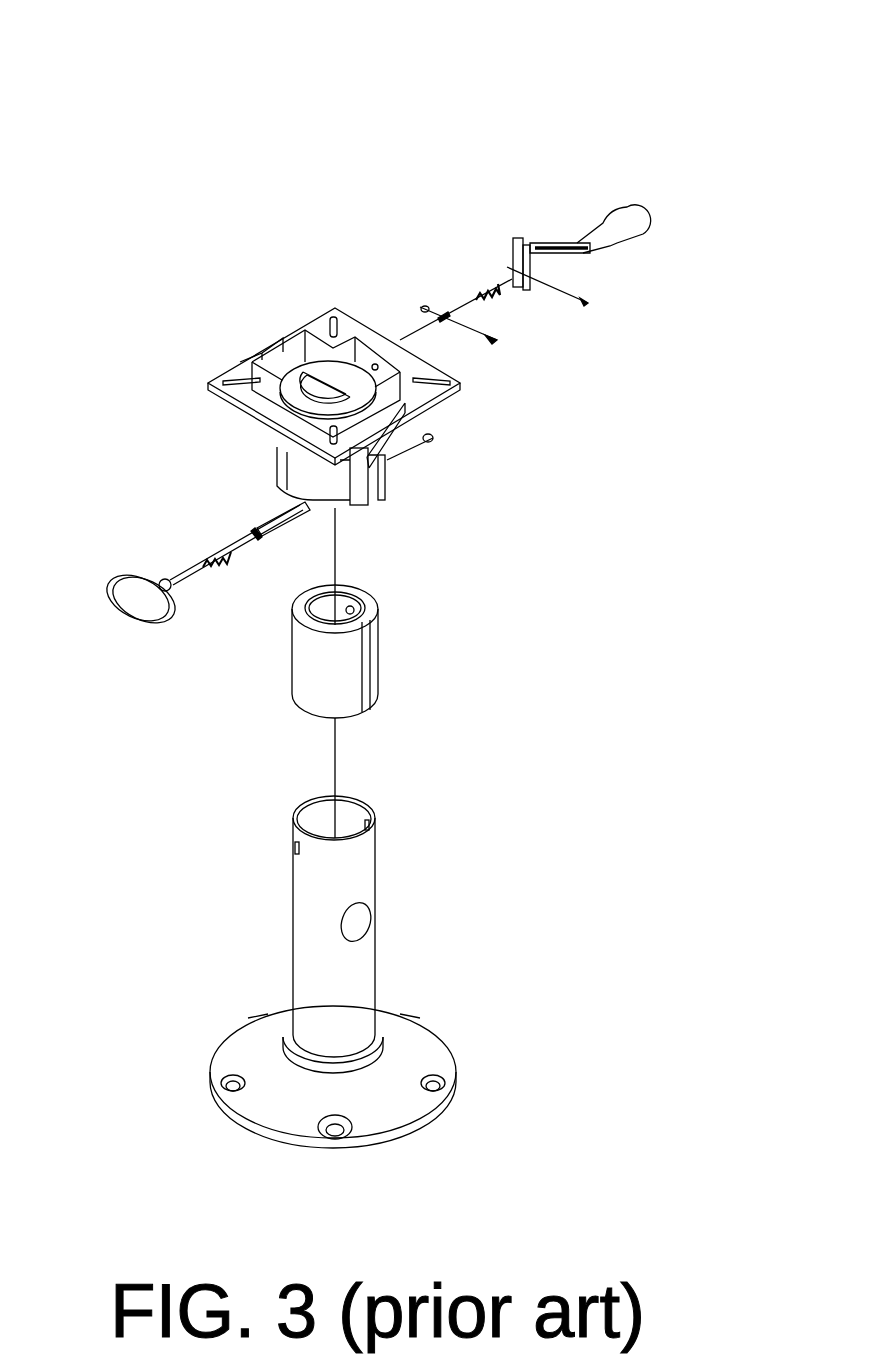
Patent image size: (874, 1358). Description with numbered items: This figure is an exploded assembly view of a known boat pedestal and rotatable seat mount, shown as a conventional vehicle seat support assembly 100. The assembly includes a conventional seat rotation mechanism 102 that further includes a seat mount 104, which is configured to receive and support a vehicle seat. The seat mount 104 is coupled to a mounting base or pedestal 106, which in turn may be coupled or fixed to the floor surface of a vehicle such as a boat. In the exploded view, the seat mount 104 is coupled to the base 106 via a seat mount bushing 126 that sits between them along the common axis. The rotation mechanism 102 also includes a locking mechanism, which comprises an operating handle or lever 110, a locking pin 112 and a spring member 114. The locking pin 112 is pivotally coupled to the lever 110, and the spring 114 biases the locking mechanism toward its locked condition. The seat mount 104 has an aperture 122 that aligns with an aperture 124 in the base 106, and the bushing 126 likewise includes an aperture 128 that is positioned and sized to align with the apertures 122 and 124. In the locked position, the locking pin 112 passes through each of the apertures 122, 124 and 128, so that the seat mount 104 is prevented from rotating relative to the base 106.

The vehicle seat support assembly 100 is at (175, 85).
The seat rotation mechanism 102 is at (170, 487).
The seat mount 104 is at (295, 347).
The mounting base or pedestal 106 is at (355, 985).
The operating handle or lever 110 is at (625, 225).
The locking pin 112 is at (448, 308).
The spring member 114 is at (477, 297).
The aperture 122 is at (374, 364).
The aperture 124 is at (362, 805).
The seat mount bushing 126 is at (298, 695).
The aperture 128 is at (352, 590).